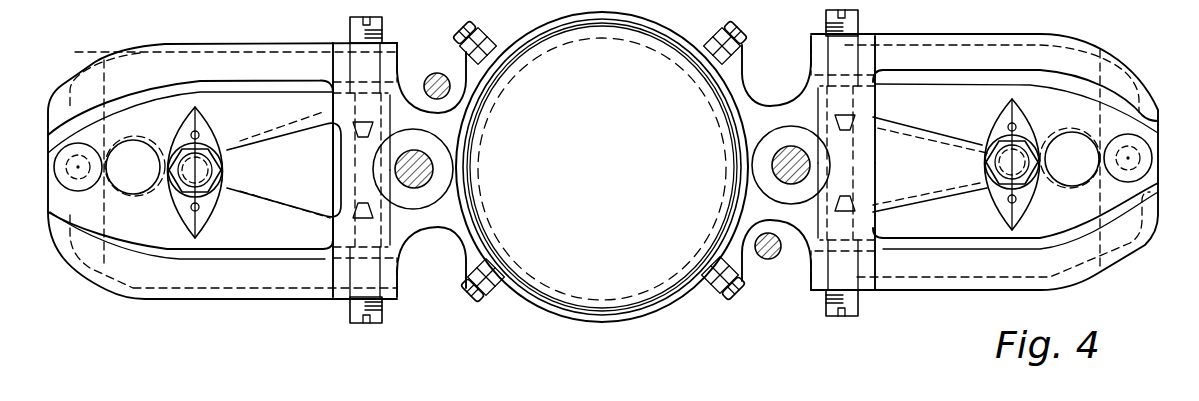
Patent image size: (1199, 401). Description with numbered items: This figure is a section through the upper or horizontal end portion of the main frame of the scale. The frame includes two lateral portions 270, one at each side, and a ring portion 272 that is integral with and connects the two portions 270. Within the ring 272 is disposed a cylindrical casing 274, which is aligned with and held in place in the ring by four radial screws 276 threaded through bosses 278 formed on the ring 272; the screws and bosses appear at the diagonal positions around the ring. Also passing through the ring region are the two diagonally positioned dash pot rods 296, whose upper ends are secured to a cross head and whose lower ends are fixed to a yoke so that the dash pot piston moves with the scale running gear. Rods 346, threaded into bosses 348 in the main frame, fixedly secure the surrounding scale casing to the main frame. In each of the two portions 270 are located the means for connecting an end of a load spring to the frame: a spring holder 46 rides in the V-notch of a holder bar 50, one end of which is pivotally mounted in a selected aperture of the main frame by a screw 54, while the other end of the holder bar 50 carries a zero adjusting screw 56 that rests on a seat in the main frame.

The portions 270 is at (159, 65).
The screw 54 is at (350, 25).
The holder bar 50 is at (603, 164).
The zero adjusting screw 56 is at (65, 172).
The spring holder 46 is at (212, 198).
The radial screws 276 is at (453, 26).
The bosses 278 is at (735, 72).
The cylindrical casing 274 is at (477, 212).
The ring portion 272 is at (586, 321).
The rods 346 is at (783, 165).
The bosses 348 is at (767, 189).
The dash pot rods 296 is at (445, 73).